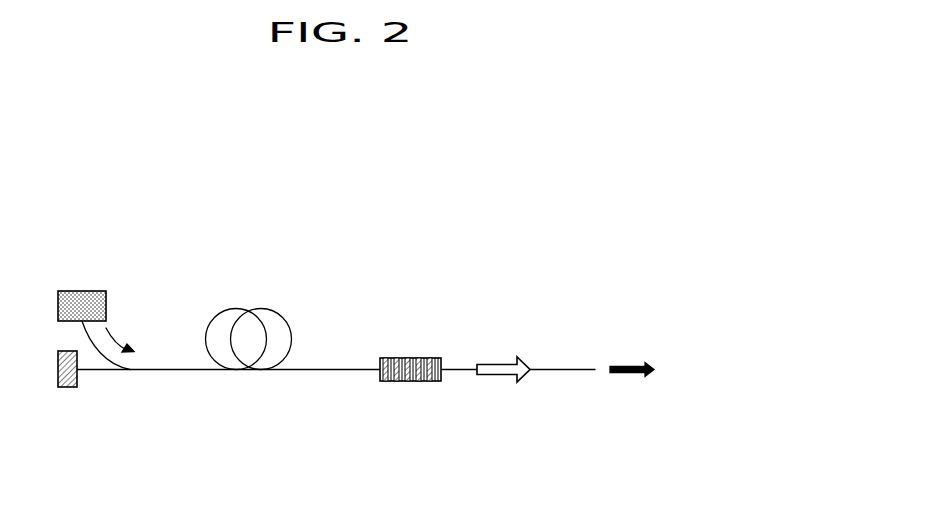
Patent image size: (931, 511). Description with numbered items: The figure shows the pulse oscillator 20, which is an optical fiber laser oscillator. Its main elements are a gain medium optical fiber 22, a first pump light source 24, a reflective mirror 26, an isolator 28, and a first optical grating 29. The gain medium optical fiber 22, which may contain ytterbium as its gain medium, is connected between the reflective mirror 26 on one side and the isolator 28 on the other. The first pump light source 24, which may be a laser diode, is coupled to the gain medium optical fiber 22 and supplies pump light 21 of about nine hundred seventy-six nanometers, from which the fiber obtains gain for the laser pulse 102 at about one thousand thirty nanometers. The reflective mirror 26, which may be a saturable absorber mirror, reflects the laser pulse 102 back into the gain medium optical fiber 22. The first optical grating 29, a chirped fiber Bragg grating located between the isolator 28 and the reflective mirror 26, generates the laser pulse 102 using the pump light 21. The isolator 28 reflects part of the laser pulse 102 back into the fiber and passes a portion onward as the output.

The pulse oscillator 20 is at (586, 203).
The pump light 21 is at (120, 326).
The gain medium optical fiber 22 is at (260, 308).
The first pump light source 24 is at (82, 290).
The reflective mirror 26 is at (66, 388).
The isolator 28 is at (499, 359).
The first optical grating 29 is at (427, 357).
The laser pulse 102 is at (628, 366).